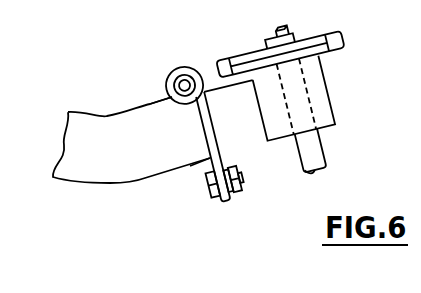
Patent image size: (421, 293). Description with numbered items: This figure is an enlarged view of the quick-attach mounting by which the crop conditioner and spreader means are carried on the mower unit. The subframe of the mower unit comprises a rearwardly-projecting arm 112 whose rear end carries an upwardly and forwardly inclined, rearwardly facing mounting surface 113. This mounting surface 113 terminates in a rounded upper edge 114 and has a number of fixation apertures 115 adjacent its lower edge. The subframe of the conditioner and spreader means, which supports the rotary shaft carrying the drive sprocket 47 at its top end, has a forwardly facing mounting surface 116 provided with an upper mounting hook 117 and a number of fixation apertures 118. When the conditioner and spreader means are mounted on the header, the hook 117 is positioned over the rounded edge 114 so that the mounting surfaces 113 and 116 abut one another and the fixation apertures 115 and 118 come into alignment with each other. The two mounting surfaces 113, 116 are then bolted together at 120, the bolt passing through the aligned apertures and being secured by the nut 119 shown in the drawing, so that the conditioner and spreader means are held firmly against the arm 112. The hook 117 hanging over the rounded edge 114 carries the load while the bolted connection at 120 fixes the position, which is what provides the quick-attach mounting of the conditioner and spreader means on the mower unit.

The drive sprocket 47 is at (336, 46).
The rearwardly-projecting arm 112 is at (110, 183).
The mounting surface 113 is at (207, 88).
The rounded upper edge 114 is at (168, 100).
The fixation apertures 115 is at (223, 198).
The mounting surface 116 is at (209, 148).
The upper mounting hook 117 is at (172, 74).
The fixation apertures 118 is at (229, 196).
The nut 119 is at (212, 193).
The bolted connection 120 is at (242, 187).